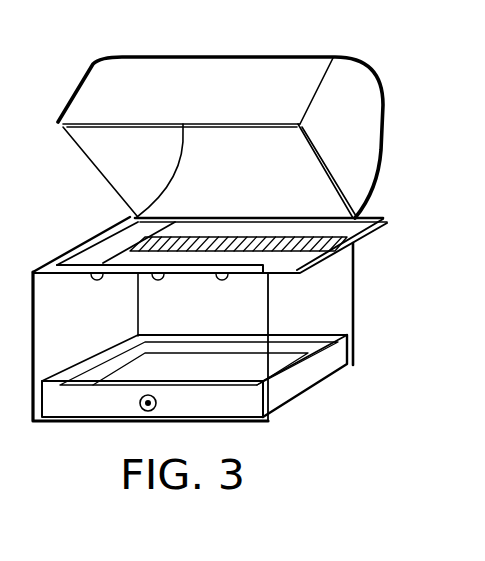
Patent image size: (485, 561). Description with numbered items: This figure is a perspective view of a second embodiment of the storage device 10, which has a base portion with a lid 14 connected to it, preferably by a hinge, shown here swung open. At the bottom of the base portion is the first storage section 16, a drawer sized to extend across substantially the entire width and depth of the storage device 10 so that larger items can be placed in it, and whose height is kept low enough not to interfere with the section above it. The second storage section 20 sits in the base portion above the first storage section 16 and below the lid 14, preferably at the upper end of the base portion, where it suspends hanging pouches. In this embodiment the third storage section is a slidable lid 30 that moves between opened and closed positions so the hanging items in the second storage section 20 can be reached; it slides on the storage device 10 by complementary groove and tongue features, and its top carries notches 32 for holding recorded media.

The storage device 10 is at (257, 212).
The lid 14 is at (231, 55).
The first storage section 16 is at (330, 356).
The second storage section 20 is at (327, 310).
The slidable lid 30 is at (263, 222).
The notches 32 is at (347, 243).